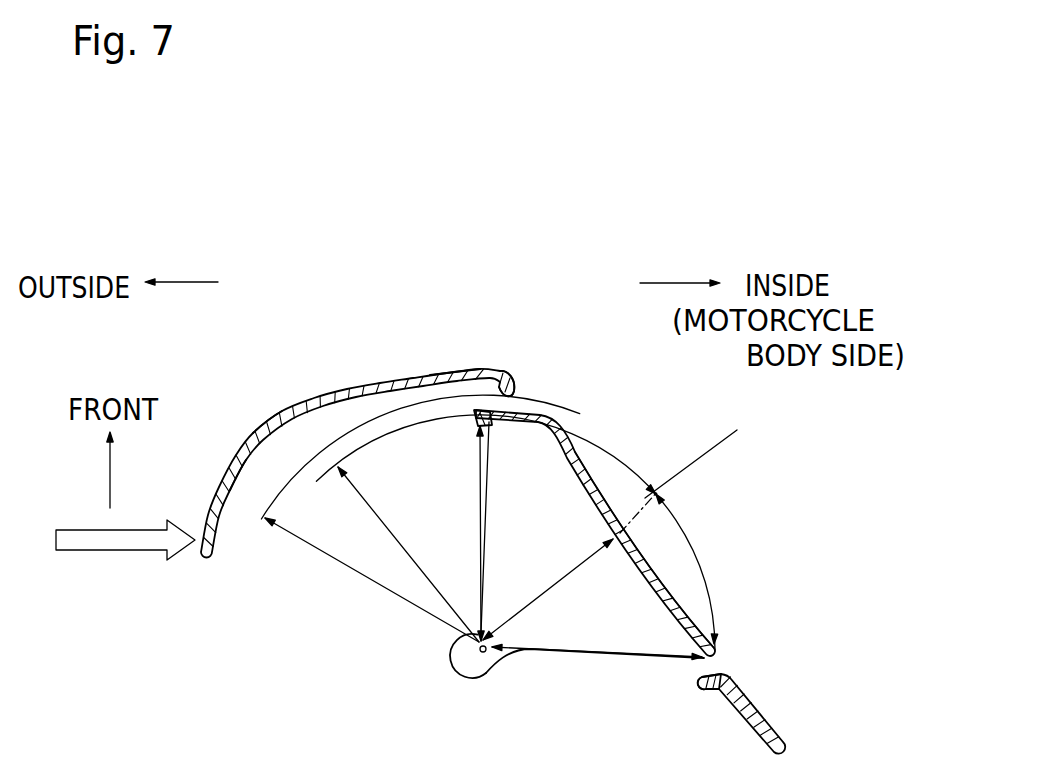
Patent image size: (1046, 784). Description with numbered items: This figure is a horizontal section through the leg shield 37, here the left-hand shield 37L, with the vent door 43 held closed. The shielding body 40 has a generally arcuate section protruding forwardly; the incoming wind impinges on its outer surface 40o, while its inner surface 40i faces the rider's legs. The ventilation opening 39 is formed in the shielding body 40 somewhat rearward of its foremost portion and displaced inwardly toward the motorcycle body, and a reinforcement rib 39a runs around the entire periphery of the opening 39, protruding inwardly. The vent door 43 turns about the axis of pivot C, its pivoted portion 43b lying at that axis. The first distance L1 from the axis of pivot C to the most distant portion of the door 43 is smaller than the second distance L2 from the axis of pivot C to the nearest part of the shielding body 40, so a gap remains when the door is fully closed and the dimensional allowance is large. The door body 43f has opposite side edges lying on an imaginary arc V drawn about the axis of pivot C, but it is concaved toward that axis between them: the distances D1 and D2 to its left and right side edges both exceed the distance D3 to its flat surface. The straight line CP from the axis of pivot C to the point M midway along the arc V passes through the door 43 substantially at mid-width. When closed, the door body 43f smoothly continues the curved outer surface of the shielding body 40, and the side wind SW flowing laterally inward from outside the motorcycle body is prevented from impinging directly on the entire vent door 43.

The leg shield 37 is at (357, 434).
The left cowl 37L is at (358, 386).
The shielding body 40 is at (477, 368).
The outer surface 40o is at (280, 420).
The inner surface 40i is at (244, 462).
The ventilation opening 39 is at (720, 678).
The reinforcement rib 39a is at (500, 371).
The vent door 43 is at (607, 563).
The door body 43f is at (633, 540).
The base portion of rib 43b is at (485, 665).
The axis of pivot C is at (481, 651).
The distance to left side edge D1 is at (478, 477).
The distance to right side edge D2 is at (667, 663).
The distance to flat surface of door body D3 is at (560, 590).
The first distance L1 is at (380, 525).
The second distance L2 is at (352, 573).
The imaginary arc V is at (708, 583).
The point intermediate of the arc M is at (655, 490).
The straight line CP is at (735, 440).
The side wind SW is at (93, 552).